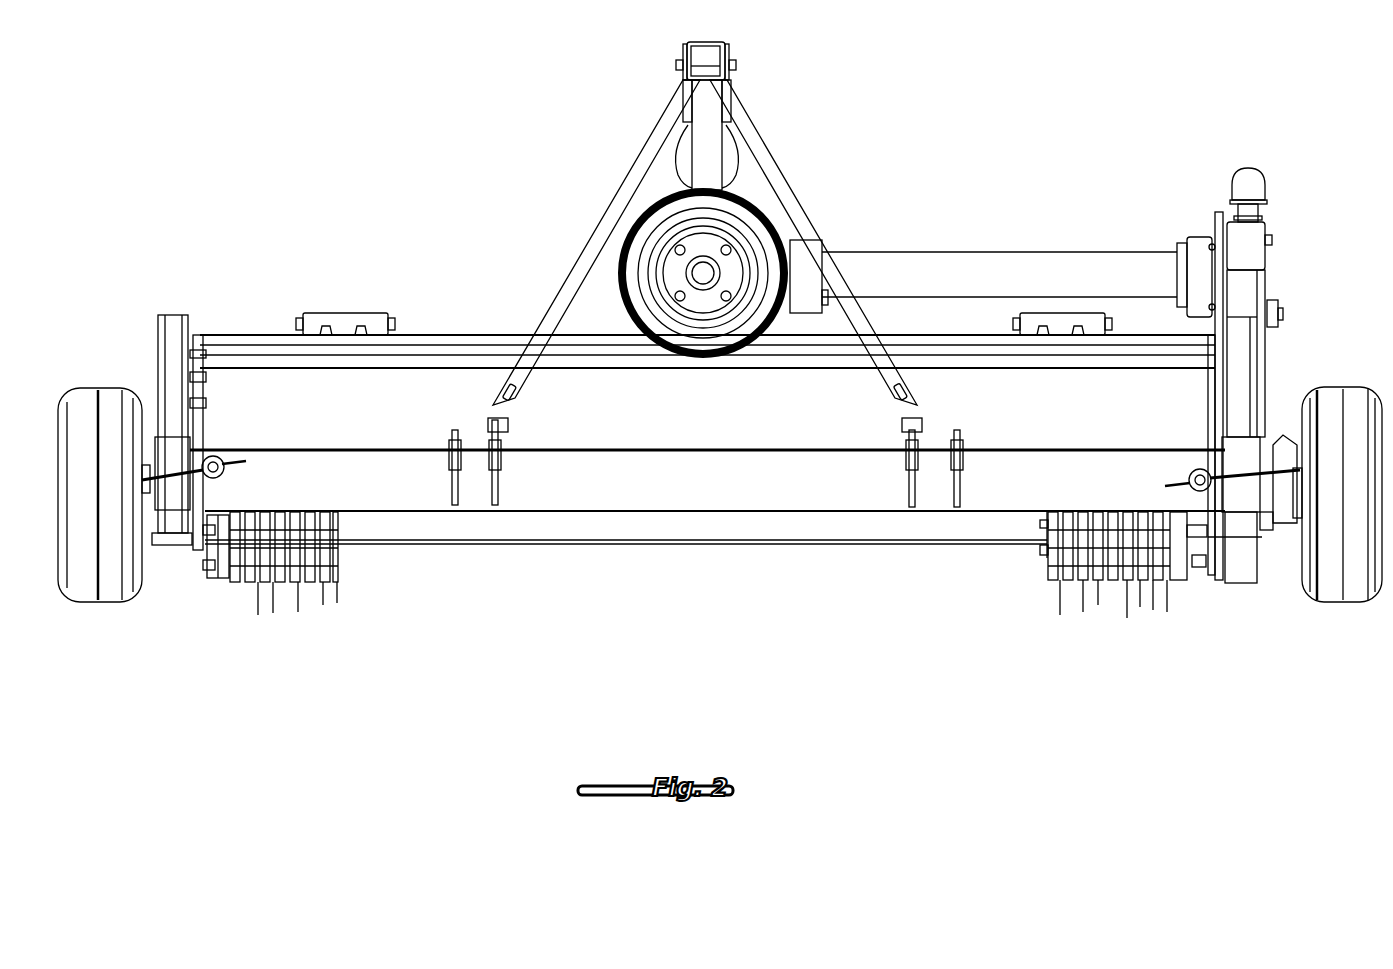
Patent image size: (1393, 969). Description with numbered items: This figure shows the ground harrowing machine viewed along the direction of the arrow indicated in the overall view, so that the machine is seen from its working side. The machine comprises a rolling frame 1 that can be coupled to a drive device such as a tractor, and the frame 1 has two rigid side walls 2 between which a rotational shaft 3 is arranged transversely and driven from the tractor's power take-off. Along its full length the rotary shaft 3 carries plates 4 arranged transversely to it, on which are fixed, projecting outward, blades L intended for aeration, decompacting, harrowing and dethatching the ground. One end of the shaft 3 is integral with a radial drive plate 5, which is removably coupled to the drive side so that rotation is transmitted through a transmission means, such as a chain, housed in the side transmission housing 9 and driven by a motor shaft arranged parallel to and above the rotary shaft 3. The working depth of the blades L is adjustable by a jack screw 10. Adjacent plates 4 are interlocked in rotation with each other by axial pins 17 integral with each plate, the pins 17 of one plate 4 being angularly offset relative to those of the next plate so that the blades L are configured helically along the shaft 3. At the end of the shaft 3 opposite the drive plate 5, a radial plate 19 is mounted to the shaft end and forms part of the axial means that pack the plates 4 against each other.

The rolling frame 1 is at (588, 176).
The rigid side walls 2 is at (195, 578).
The rotational shaft 3 is at (615, 530).
The plates 4 is at (276, 595).
The radial drive plate 5 is at (1172, 567).
The side transmission housing 9 is at (1268, 350).
The jack screw 10 is at (1248, 252).
The axial pins 17 is at (1043, 548).
The radial plate 19 is at (221, 572).
The blades L is at (298, 615).